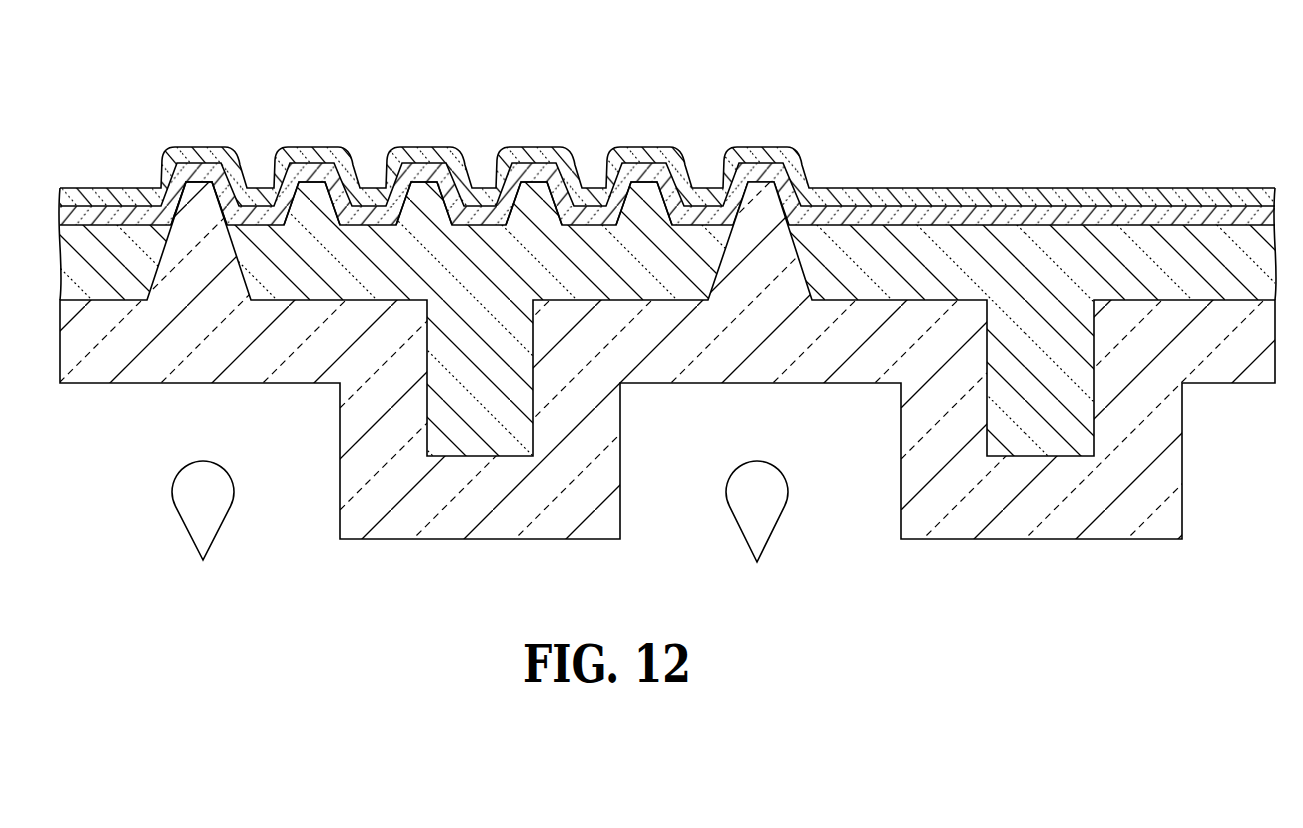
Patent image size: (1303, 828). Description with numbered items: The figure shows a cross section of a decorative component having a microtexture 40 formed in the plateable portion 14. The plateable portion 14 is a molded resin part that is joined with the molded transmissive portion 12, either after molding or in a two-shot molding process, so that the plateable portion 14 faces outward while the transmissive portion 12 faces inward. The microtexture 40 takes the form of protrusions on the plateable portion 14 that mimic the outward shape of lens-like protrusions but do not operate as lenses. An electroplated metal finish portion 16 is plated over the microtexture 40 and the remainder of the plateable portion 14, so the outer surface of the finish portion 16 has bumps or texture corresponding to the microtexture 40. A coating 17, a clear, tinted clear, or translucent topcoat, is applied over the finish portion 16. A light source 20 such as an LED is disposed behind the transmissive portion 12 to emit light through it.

The transmissive portion 12 is at (1217, 372).
The plateable portion 14 is at (577, 253).
The finish portion 16 is at (478, 193).
The coating 17 is at (1052, 189).
The light source 20 is at (767, 508).
The microtexture 40 is at (203, 200).